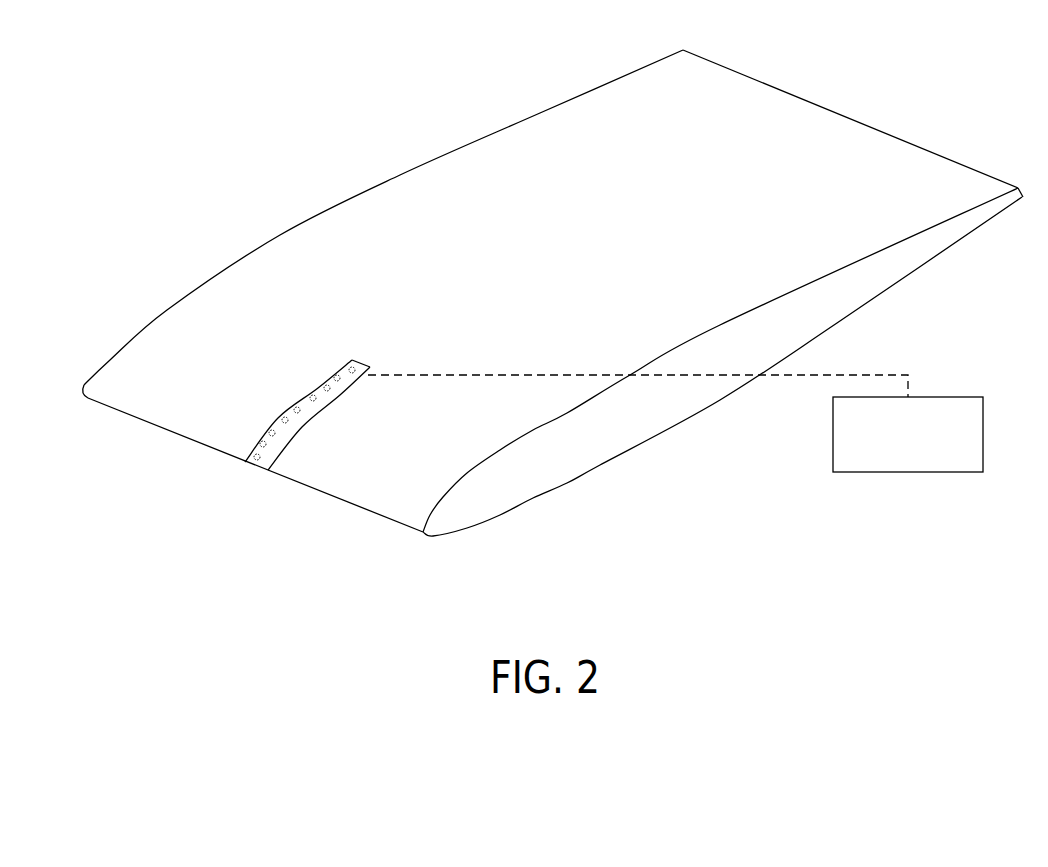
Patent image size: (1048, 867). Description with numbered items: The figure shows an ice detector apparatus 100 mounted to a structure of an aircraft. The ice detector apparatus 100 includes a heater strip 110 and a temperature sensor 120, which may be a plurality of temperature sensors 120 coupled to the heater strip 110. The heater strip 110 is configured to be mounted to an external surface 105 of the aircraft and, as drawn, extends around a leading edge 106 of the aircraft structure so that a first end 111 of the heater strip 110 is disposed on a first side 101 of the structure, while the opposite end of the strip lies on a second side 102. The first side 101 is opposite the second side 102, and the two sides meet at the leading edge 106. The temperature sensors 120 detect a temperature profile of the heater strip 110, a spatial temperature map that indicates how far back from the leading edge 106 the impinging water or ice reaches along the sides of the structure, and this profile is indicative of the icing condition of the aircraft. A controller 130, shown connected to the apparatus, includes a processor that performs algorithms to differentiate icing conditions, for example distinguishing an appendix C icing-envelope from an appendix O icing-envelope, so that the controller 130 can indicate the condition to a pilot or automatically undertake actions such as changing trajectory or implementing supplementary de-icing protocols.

The ice detector apparatus 100 is at (262, 366).
The first side 101 is at (517, 427).
The second side 102 is at (502, 515).
The external surface 105 is at (678, 226).
The leading edge 106 is at (413, 525).
The heater strip 110 is at (338, 372).
The first end 111 is at (358, 357).
The temperature sensor 120 is at (275, 433).
The controller 130 is at (926, 447).